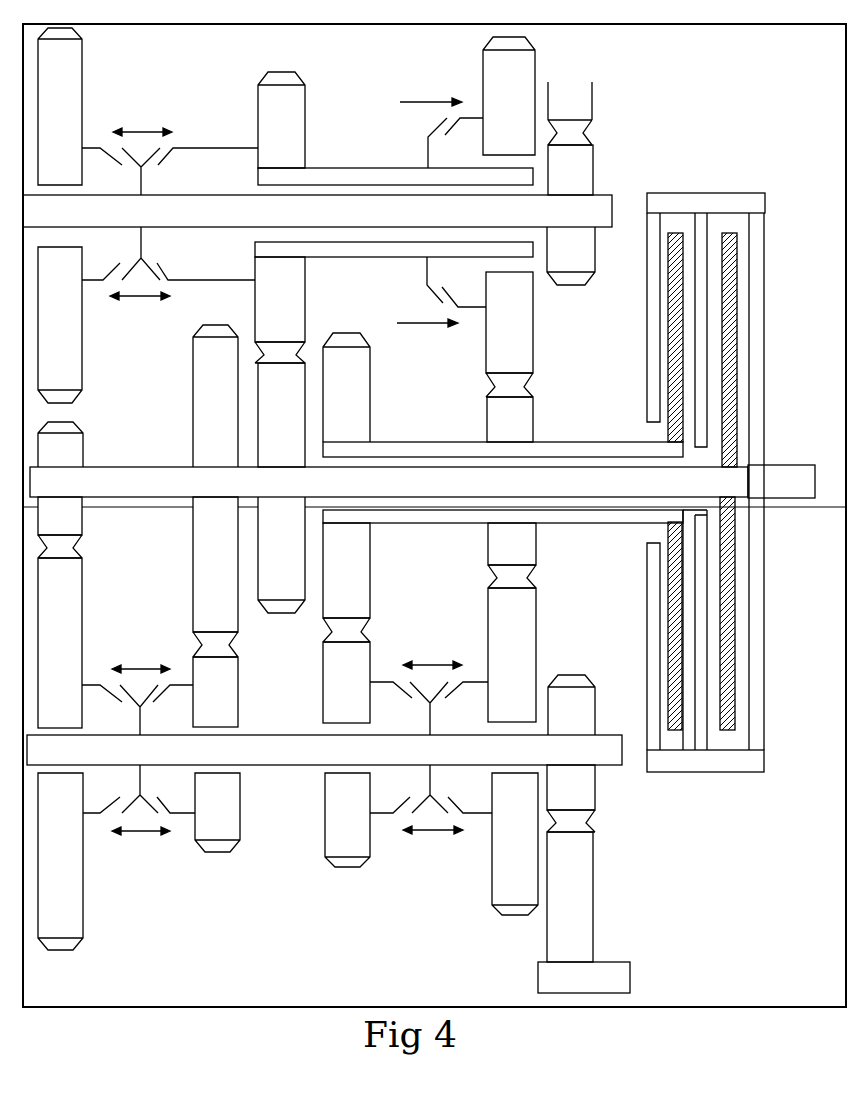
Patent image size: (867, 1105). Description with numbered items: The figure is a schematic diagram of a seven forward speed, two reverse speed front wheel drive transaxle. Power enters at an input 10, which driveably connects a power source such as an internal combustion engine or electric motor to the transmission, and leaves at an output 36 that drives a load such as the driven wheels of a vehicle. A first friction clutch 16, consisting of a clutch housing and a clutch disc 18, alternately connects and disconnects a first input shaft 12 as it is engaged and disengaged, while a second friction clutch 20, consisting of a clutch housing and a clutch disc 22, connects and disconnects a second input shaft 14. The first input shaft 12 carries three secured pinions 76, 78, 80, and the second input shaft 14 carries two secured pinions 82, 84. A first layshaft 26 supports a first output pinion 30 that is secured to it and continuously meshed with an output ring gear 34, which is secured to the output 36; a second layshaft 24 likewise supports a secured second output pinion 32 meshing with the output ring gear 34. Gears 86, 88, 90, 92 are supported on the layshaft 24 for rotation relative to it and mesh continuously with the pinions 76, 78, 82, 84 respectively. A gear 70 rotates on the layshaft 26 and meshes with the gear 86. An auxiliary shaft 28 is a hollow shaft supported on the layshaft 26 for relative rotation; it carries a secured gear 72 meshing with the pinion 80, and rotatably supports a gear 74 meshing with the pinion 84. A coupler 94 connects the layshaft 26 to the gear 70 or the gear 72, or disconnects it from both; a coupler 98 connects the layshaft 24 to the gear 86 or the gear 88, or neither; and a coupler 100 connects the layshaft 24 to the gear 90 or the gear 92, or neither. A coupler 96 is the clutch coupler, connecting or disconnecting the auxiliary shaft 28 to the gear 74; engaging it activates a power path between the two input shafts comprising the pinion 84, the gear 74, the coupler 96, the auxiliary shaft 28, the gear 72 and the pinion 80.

The input 10 is at (781, 481).
The first input shaft 12 is at (389, 482).
The second input shaft 14 is at (593, 448).
The first friction clutch 16 is at (728, 200).
The clutch disc 18 is at (728, 332).
The second friction clutch 20 is at (672, 200).
The clutch disc 22 is at (670, 360).
The second layshaft 24 is at (324, 750).
The first layshaft 26 is at (317, 211).
The auxiliary shaft 28 is at (356, 177).
The first output pinion 30 is at (571, 215).
The second output pinion 32 is at (571, 742).
The output ring gear 34 is at (571, 521).
The output 36 is at (584, 977).
The gear 70 is at (59, 325).
The gear 72 is at (280, 310).
The gear 74 is at (509, 334).
The pinion 76 is at (60, 444).
The pinion 78 is at (215, 478).
The pinion 80 is at (281, 415).
The pinion 82 is at (346, 475).
The pinion 84 is at (511, 481).
The gear 86 is at (60, 723).
The gear 88 is at (216, 742).
The gear 90 is at (346, 742).
The gear 92 is at (513, 740).
The coupler 94 is at (141, 134).
The clutch coupler 96 is at (425, 100).
The coupler 98 is at (140, 667).
The coupler 100 is at (433, 663).